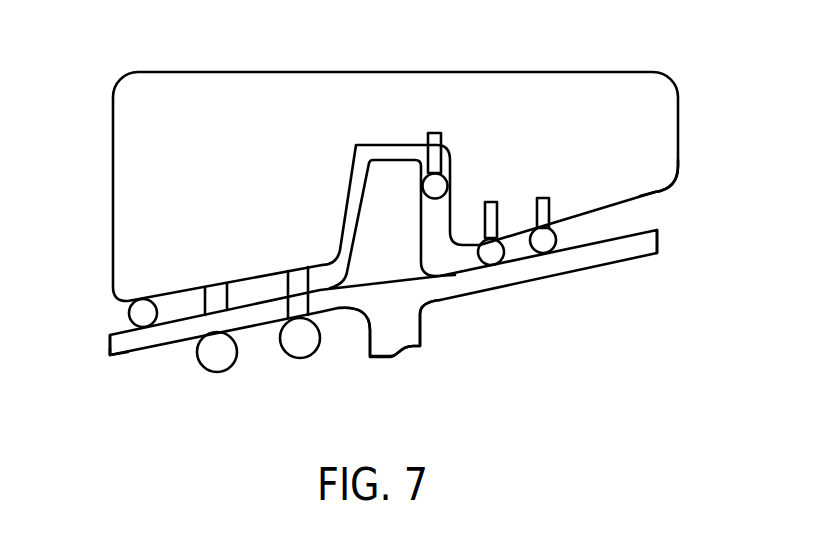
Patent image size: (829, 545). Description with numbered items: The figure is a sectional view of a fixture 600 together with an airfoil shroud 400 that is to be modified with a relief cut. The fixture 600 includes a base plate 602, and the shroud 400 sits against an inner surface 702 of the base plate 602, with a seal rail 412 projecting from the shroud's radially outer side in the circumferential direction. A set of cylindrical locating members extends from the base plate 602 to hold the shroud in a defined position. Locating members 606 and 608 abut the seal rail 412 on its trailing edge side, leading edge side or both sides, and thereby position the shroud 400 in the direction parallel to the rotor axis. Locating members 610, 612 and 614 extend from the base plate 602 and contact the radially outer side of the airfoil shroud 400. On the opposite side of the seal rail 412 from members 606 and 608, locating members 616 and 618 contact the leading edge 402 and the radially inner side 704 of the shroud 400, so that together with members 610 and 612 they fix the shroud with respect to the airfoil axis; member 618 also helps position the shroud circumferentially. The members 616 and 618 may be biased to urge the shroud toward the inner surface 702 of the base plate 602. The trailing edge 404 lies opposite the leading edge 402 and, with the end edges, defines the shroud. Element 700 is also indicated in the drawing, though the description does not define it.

The fixture 600 is at (200, 72).
The base plate 602 is at (155, 131).
The locating member 606 is at (448, 108).
The locating member 608 is at (435, 133).
The locating member 610 is at (550, 212).
The locating member 612 is at (490, 202).
The locating member 614 is at (130, 308).
The locating member 616 is at (300, 359).
The locating member 618 is at (217, 373).
The airfoil shroud 400 is at (617, 262).
The leading edge 402 is at (110, 346).
The trailing edge 404 is at (658, 240).
The seal rail 412 is at (388, 145).
The alignment protrusion 700 is at (410, 340).
The inner surface 702 is at (660, 192).
The radially inner side 704 is at (121, 358).